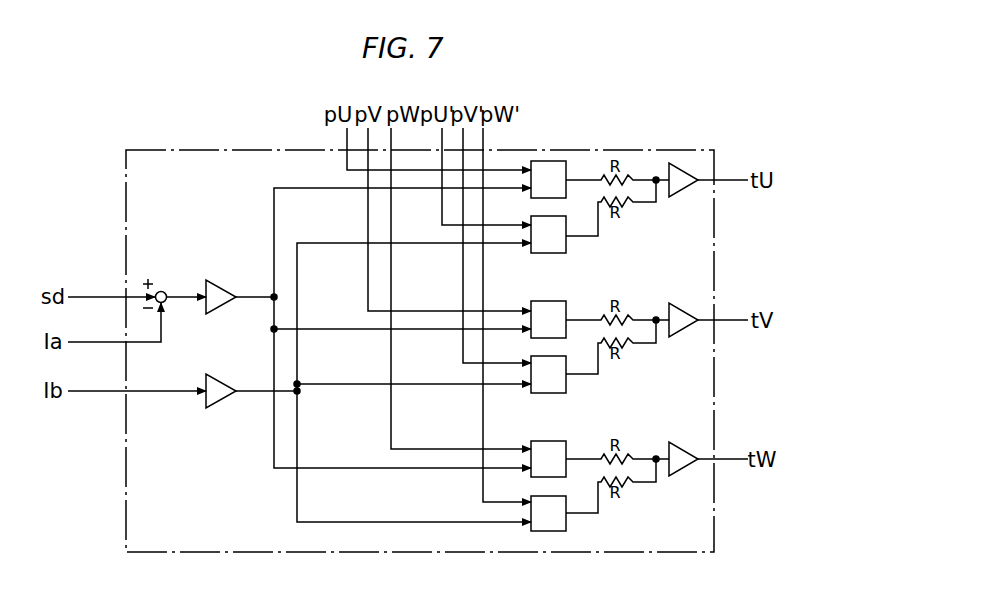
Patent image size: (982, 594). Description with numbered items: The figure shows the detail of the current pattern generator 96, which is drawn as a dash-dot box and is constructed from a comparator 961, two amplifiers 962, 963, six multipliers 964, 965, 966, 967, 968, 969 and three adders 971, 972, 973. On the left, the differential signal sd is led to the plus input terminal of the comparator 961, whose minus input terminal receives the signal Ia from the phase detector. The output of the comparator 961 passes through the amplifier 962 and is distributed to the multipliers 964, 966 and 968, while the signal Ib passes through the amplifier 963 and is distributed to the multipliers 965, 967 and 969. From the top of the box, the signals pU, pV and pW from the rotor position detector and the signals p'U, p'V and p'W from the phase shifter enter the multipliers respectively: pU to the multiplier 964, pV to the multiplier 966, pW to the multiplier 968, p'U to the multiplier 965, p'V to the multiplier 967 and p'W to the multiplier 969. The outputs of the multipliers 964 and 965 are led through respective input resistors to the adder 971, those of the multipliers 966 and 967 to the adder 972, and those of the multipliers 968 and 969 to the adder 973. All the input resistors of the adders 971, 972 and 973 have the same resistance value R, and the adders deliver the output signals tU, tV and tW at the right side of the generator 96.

The current pattern generator 96 is at (158, 150).
The comparator 961 is at (163, 291).
The amplifier 962 is at (222, 284).
The amplifier 963 is at (220, 400).
The multiplier 964 is at (566, 166).
The multiplier 965 is at (566, 252).
The multiplier 966 is at (566, 305).
The multiplier 967 is at (566, 392).
The multiplier 968 is at (566, 445).
The multiplier 969 is at (566, 530).
The adder 971 is at (680, 194).
The adder 972 is at (680, 334).
The adder 973 is at (680, 473).